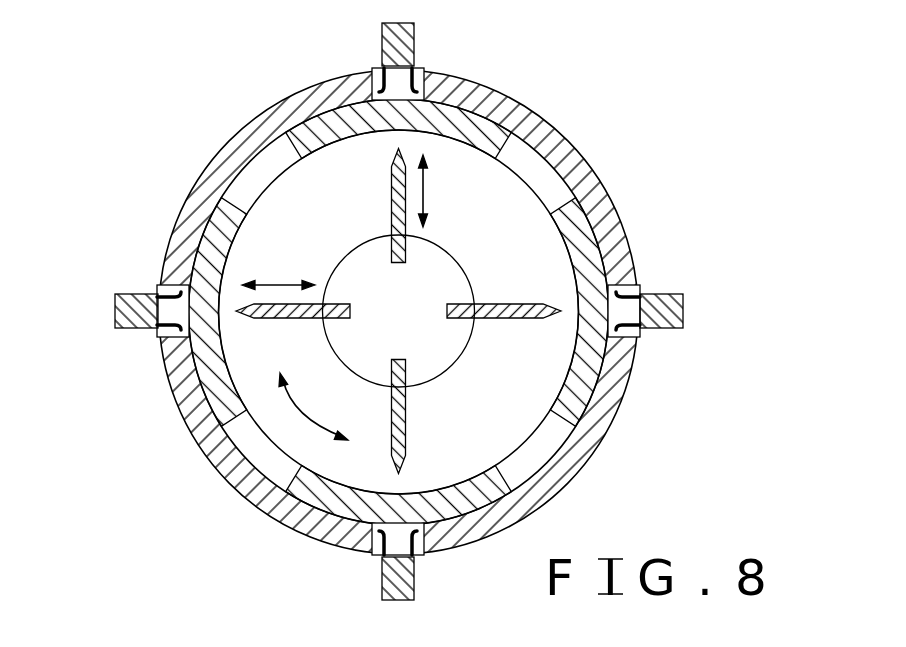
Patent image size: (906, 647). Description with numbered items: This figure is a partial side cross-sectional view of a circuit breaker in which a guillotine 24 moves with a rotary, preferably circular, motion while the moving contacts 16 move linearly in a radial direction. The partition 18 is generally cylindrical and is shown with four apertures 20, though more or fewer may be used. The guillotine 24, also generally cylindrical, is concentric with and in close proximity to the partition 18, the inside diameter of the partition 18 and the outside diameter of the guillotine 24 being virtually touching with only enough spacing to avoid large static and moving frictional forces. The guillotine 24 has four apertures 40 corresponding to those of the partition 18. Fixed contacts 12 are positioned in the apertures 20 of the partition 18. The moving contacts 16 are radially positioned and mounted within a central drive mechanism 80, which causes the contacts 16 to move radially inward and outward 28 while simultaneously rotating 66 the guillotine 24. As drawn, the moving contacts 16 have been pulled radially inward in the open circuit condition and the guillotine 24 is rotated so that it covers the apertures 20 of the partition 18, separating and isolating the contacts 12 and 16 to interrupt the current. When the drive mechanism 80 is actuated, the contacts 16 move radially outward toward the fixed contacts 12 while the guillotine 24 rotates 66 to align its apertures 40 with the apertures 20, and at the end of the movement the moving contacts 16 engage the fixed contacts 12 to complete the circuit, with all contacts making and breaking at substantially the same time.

The fixed contacts 12 is at (145, 290).
The moving contacts 16 is at (390, 192).
The partition 18 is at (613, 220).
The apertures 20 is at (165, 332).
The guillotine 24 is at (568, 372).
The radial inward and outward movement 28 is at (427, 186).
The apertures 40 is at (536, 178).
The rotating 66 is at (312, 410).
The drive mechanism 80 is at (430, 368).